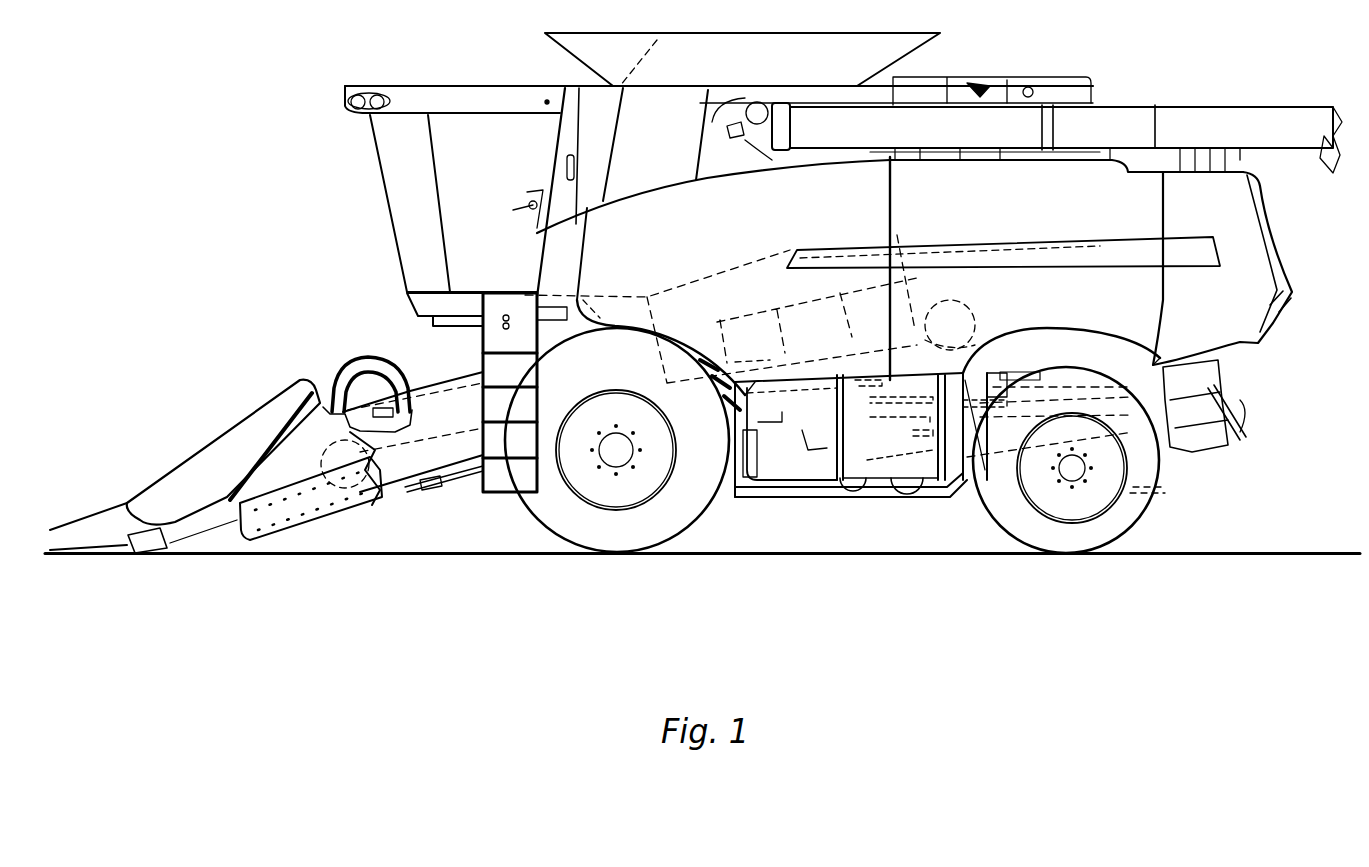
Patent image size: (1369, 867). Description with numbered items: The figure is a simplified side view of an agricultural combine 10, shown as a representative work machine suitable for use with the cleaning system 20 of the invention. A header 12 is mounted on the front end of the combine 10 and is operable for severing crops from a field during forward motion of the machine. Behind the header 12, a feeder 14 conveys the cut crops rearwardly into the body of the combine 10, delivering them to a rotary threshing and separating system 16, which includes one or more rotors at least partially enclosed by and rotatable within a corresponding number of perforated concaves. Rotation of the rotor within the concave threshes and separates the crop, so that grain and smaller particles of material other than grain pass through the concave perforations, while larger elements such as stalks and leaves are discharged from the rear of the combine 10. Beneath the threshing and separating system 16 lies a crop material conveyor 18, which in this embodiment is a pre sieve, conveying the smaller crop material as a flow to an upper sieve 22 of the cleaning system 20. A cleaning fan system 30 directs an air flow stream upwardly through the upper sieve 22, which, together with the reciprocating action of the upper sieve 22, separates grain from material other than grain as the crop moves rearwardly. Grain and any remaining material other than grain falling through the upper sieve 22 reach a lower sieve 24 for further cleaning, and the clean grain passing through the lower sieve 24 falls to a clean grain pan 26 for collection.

The agricultural combine 10 is at (1192, 78).
The header 12 is at (100, 507).
The feeder 14 is at (448, 380).
The rotary threshing and separating system 16 is at (683, 287).
The crop material conveyor 18 is at (703, 398).
The cleaning system 20 is at (987, 330).
The upper sieve 22 is at (1073, 388).
The lower sieve 24 is at (1003, 445).
The clean grain pan 26 is at (855, 470).
The cleaning fan system 30 is at (785, 460).